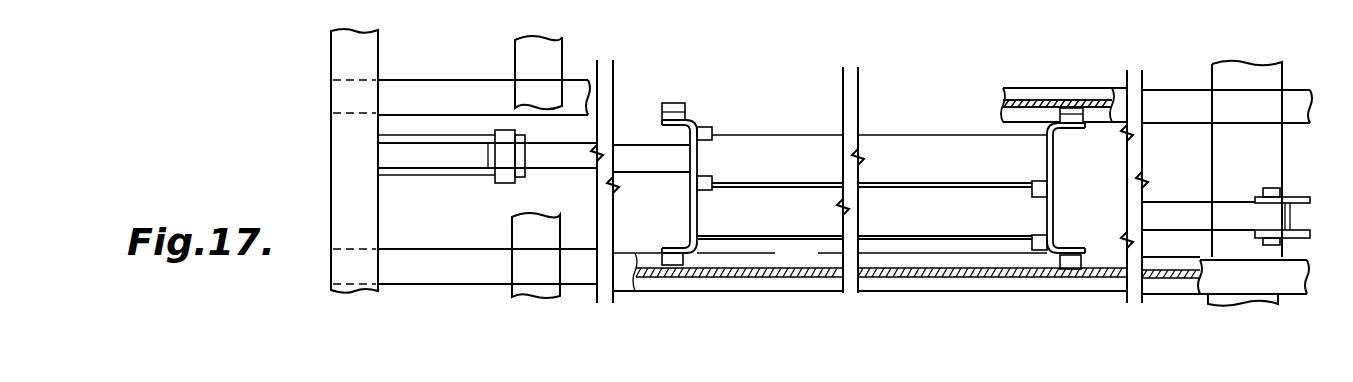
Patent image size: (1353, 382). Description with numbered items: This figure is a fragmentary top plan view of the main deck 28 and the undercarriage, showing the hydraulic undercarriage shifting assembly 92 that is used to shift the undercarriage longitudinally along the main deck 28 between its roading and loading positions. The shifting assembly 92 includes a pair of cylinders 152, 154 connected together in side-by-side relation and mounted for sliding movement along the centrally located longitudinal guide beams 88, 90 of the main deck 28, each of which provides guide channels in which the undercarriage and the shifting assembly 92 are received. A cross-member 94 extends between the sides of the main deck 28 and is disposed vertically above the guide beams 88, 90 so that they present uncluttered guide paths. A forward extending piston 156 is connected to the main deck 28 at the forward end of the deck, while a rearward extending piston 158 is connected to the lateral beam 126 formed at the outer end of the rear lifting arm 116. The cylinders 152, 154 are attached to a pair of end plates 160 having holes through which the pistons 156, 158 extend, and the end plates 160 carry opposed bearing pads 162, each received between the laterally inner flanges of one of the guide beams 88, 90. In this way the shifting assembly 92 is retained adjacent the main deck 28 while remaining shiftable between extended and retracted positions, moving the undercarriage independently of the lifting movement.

The main deck 28 is at (333, 64).
The cross-member 94 is at (556, 46).
The bearing pad 162 is at (673, 103).
The cylinder 152 is at (803, 135).
The forward extending piston 156 is at (638, 165).
The end plate 160 is at (690, 196).
The cylinder 154 is at (779, 229).
The longitudinal I-beam 88 is at (924, 283).
The undercarriage shifting assembly 92 is at (935, 135).
The longitudinal I-beam 90 is at (1018, 88).
The lifting arm 116 is at (1245, 70).
The lateral beam 126 is at (1276, 146).
The rearward extending piston 158 is at (1173, 205).